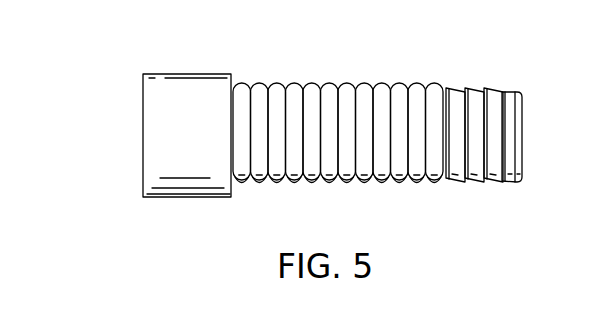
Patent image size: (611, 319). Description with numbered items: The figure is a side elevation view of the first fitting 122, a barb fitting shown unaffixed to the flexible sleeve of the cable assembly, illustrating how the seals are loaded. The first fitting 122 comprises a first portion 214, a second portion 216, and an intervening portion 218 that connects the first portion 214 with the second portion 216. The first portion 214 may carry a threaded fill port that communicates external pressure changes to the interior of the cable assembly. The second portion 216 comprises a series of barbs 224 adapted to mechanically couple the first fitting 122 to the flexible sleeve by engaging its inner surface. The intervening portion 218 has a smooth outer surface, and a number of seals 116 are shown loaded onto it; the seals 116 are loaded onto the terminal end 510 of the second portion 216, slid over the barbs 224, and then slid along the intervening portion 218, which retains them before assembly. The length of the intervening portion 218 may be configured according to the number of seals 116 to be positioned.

The first fitting 122 is at (78, 68).
The first portion 214 is at (230, 201).
The intervening portion 218 is at (338, 137).
The seals 116 is at (259, 83).
The second portion 216 is at (506, 138).
The barbs 224 is at (456, 87).
The terminal end 510 is at (536, 119).